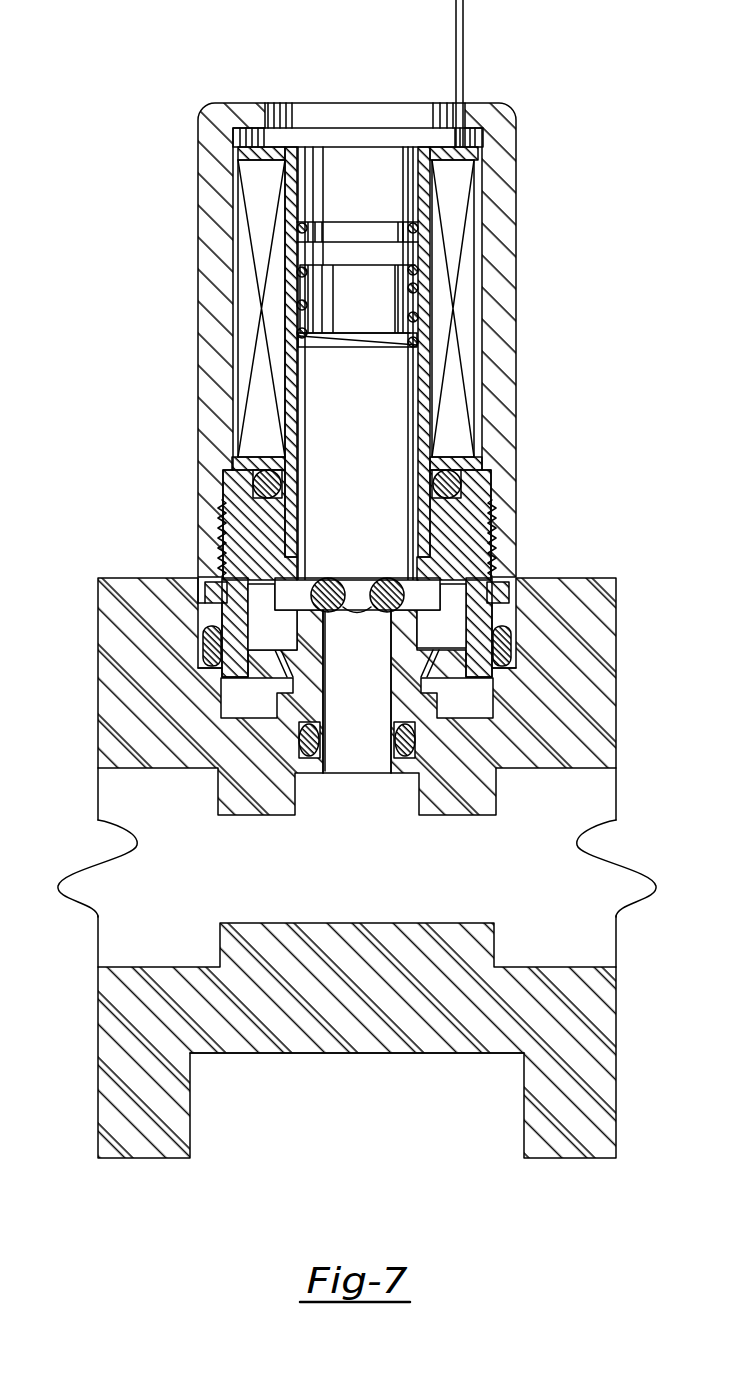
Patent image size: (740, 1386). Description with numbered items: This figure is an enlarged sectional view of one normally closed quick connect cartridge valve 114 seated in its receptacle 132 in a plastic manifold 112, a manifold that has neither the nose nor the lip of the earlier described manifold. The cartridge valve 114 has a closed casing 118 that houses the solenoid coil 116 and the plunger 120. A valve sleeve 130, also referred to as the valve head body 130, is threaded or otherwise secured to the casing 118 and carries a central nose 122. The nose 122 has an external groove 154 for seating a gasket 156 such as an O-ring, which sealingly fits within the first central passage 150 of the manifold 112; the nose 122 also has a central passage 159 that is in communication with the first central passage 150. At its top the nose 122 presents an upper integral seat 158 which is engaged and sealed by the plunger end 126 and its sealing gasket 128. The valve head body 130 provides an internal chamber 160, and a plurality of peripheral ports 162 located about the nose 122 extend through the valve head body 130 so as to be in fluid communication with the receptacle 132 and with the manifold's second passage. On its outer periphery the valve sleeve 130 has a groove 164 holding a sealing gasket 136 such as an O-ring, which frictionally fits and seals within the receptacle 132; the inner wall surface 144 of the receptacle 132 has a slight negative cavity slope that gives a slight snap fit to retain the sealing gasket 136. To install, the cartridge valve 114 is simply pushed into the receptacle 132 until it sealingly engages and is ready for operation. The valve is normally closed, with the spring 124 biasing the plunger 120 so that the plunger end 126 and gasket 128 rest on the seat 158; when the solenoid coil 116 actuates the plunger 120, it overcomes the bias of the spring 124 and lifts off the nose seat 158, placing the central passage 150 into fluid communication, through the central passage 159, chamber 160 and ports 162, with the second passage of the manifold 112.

The plastic manifold 112 is at (580, 575).
The cartridge valve 114 is at (515, 339).
The solenoid coil 116 is at (468, 274).
The casing 118 is at (507, 171).
The plunger 120 is at (344, 460).
The central nose 122 is at (323, 688).
The spring 124 is at (411, 274).
The plunger end 126 is at (355, 616).
The sealing gasket 128 is at (388, 579).
The valve sleeve 130 is at (489, 506).
The receptacle 132 is at (233, 705).
The sealing gasket 136 is at (203, 648).
The inner wall surface 144 is at (206, 600).
The first central passage 150 is at (344, 814).
The external groove 154 is at (298, 748).
The gasket 156 is at (417, 750).
The upper integral seat 158 is at (301, 611).
The central passage 159 is at (346, 764).
The internal chamber 160 is at (428, 642).
The peripheral ports 162 is at (434, 676).
The groove 164 is at (203, 601).